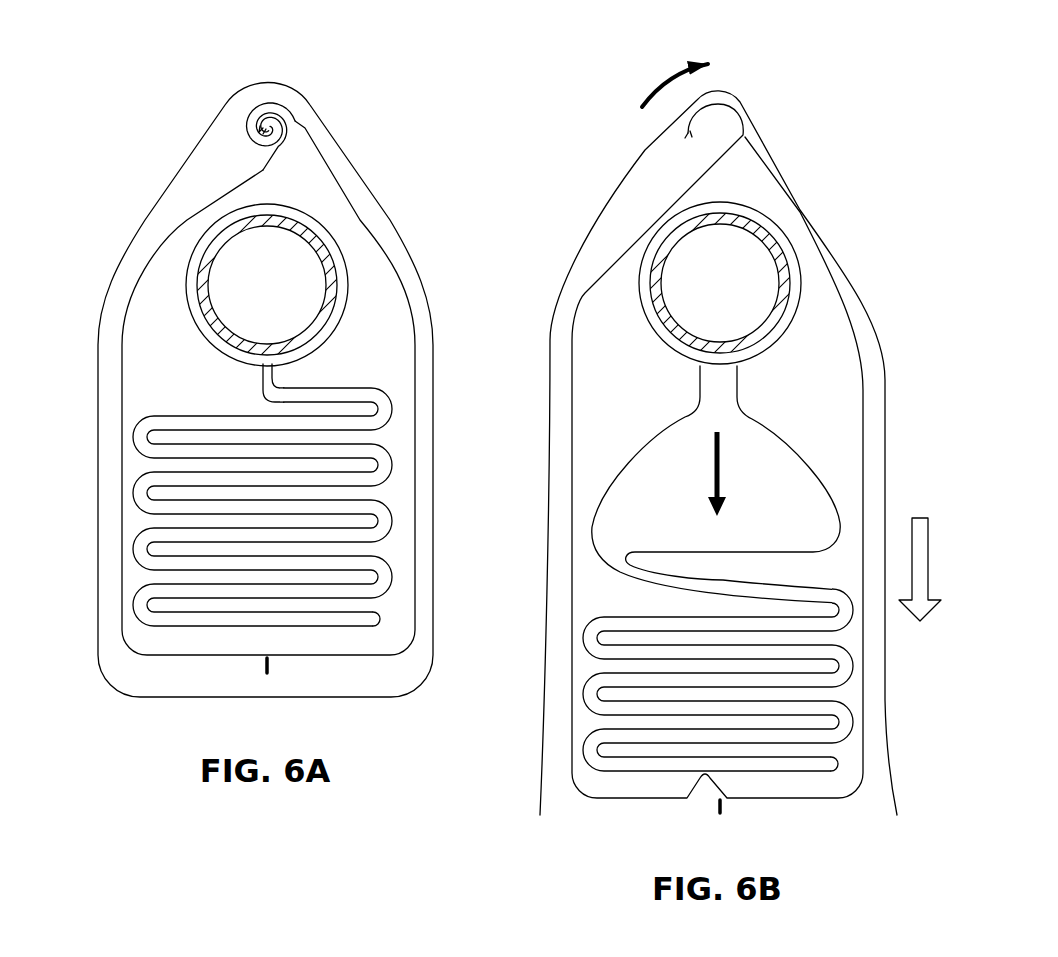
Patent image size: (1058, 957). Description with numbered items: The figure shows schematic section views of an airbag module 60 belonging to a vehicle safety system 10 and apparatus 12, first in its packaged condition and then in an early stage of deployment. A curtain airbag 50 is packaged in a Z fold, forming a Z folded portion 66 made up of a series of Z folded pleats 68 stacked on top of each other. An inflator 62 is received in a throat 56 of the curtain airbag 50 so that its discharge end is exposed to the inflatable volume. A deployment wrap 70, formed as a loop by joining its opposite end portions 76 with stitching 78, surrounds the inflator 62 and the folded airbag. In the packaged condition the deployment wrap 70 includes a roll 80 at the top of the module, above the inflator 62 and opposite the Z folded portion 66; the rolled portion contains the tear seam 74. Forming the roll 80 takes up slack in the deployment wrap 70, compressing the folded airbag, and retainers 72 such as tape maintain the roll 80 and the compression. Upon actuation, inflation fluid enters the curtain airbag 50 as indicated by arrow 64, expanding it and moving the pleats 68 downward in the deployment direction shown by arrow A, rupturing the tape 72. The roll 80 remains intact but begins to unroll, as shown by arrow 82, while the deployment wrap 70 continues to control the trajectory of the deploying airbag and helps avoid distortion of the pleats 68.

In FIG. 6A, the vehicle safety system 10 is at (348, 98).
In FIG. 6B, the vehicle safety system 10 is at (790, 82).
In FIG. 6A, the apparatus 12 is at (372, 115).
In FIG. 6B, the apparatus 12 is at (806, 105).
In FIG. 6A, the curtain airbag 50 is at (394, 402).
In FIG. 6B, the throat 56 is at (793, 244).
In FIG. 6A, the airbag module 60 is at (380, 155).
In FIG. 6B, the airbag module 60 is at (820, 140).
In FIG. 6A, the inflator 62 is at (203, 291).
In FIG. 6B, the inflator 62 is at (657, 291).
In FIG. 6B, the arrow indicating inflation fluid flow 64 is at (720, 470).
In FIG. 6A, the Z folded portion 66 is at (128, 520).
In FIG. 6B, the Z folded portion 66 is at (580, 705).
In FIG. 6A, the Z folded pleats 68 is at (315, 595).
In FIG. 6B, the Z folded pleats 68 is at (765, 737).
In FIG. 6A, the deployment wrap 70 is at (413, 482).
In FIG. 6B, the deployment wrap 70 is at (863, 490).
In FIG. 6A, the retainers 72 is at (98, 468).
In FIG. 6B, the retainers 72 is at (885, 380).
In FIG. 6A, the tear seam 74 is at (243, 142).
In FIG. 6B, the tear seam 74 is at (688, 133).
In FIG. 6A, the end portions 76 is at (257, 655).
In FIG. 6B, the end portions 76 is at (720, 803).
In FIG. 6A, the stitching 78 is at (268, 673).
In FIG. 6B, the stitching 78 is at (720, 813).
In FIG. 6A, the roll 80 is at (282, 103).
In FIG. 6B, the roll 80 is at (735, 103).
In FIG. 6B, the arrow indicating unrolling 82 is at (668, 73).
In FIG. 6B, the deployment direction arrow A is at (928, 563).